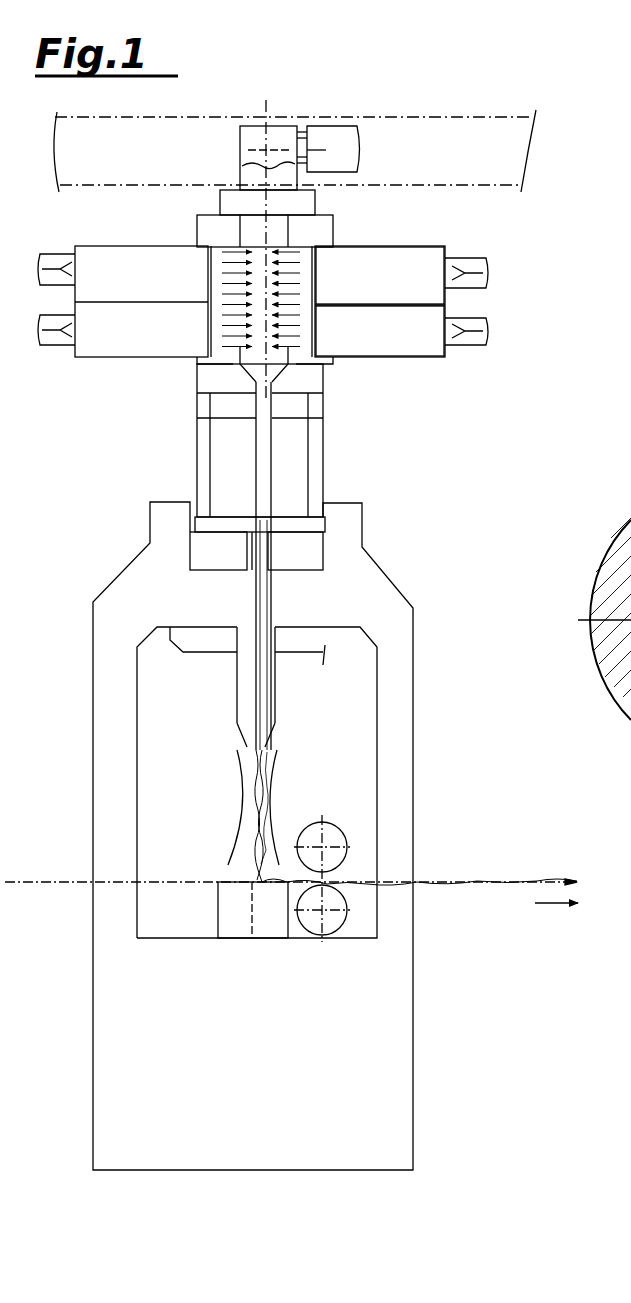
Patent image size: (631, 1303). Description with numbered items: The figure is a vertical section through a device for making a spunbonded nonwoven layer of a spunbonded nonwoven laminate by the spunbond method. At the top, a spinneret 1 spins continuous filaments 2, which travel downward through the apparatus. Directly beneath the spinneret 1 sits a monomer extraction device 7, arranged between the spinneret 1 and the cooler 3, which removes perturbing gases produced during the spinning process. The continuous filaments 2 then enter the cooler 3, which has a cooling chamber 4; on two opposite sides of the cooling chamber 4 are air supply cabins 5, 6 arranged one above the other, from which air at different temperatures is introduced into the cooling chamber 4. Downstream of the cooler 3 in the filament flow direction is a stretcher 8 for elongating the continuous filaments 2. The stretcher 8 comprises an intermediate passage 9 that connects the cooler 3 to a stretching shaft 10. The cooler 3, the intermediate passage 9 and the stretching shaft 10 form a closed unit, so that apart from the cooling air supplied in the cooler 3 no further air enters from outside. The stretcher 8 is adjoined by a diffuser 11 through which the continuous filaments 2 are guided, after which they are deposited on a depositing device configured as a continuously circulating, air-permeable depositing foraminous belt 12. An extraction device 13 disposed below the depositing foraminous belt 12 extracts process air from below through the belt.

The spinneret 1 is at (248, 128).
The continuous filaments 2 is at (252, 827).
The cooler 3 is at (473, 242).
The cooling chamber 4 is at (272, 265).
The air supply cabin 5 is at (392, 289).
The air supply cabin 6 is at (392, 352).
The monomer extraction device 7 is at (190, 208).
The stretcher 8 is at (278, 600).
The intermediate passage 9 is at (262, 492).
The stretching shaft 10 is at (262, 673).
The diffuser 11 is at (228, 782).
The depositing foraminous belt 12 is at (180, 882).
The extraction device 13 is at (236, 935).